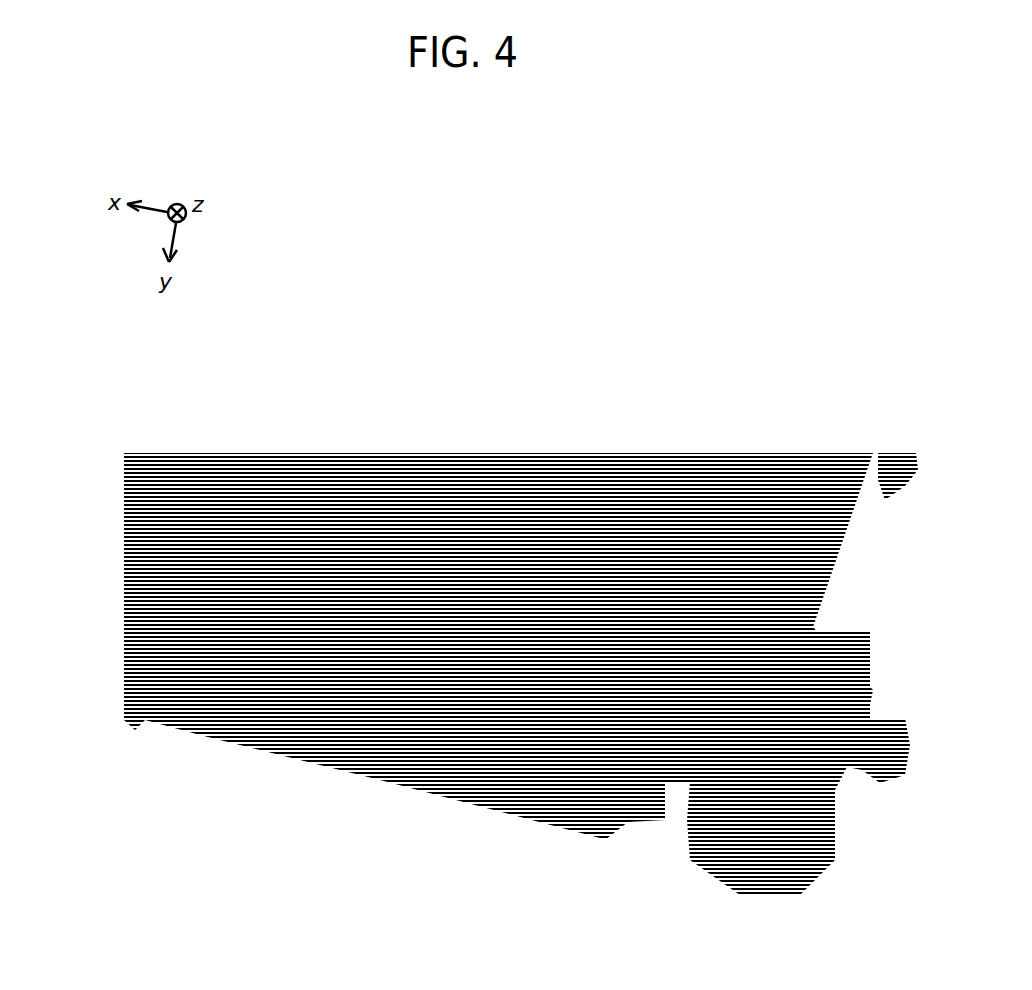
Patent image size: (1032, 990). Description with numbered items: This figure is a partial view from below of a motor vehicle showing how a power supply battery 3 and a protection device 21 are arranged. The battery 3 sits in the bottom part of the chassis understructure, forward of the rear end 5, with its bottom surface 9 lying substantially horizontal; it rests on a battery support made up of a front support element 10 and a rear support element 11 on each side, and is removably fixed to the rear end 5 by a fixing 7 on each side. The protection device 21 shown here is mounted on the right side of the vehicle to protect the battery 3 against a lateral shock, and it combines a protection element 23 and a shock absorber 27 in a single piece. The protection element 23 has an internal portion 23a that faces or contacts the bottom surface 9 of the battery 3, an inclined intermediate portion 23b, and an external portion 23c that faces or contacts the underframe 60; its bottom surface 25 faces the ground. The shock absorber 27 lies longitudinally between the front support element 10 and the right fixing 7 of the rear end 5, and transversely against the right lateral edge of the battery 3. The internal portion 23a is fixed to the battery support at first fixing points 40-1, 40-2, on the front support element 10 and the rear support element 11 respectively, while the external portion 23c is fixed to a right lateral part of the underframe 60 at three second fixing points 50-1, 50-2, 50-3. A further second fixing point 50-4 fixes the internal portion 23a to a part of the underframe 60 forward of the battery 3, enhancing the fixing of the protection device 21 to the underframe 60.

The battery 3 is at (688, 488).
The rear end 5 is at (825, 741).
The fixing 7 is at (455, 728).
The bottom surface 9 is at (641, 488).
The front support element 10 is at (265, 587).
The rear support element 11 is at (587, 690).
The protection device 21 is at (210, 599).
The protection element 23 is at (386, 576).
The internal portion 23a is at (482, 585).
The intermediate portion 23b is at (227, 662).
The external portion 23c is at (183, 693).
The bottom surface 25 is at (427, 580).
The shock absorber 27 is at (398, 720).
The first fixing point 40-1 is at (300, 600).
The first fixing point 40-2 is at (571, 635).
The second fixing point 50-1 is at (212, 698).
The second fixing point 50-2 is at (278, 713).
The second fixing point 50-3 is at (341, 734).
The second fixing point 50-4 is at (233, 522).
The underframe 60 is at (191, 482).